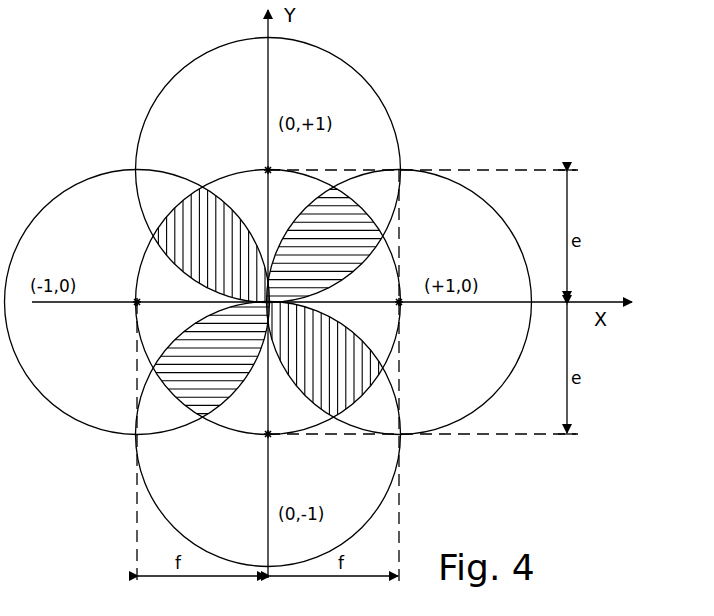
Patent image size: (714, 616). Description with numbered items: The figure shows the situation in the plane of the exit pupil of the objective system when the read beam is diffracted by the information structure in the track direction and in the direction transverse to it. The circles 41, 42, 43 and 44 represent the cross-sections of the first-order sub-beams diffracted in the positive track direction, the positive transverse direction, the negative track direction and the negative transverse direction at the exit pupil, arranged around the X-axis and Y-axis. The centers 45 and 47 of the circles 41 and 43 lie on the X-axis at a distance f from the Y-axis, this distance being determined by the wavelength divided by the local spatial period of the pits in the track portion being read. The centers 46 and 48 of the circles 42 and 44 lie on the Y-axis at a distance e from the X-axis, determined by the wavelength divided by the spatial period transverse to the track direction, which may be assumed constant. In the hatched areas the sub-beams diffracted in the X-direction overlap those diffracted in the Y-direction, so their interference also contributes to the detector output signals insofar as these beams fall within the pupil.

The circle 41 is at (503, 228).
The circle 42 is at (376, 91).
The circle 43 is at (62, 194).
The circle 44 is at (162, 514).
The center 45 is at (403, 306).
The center 46 is at (266, 169).
The center 47 is at (135, 305).
The center 48 is at (266, 438).